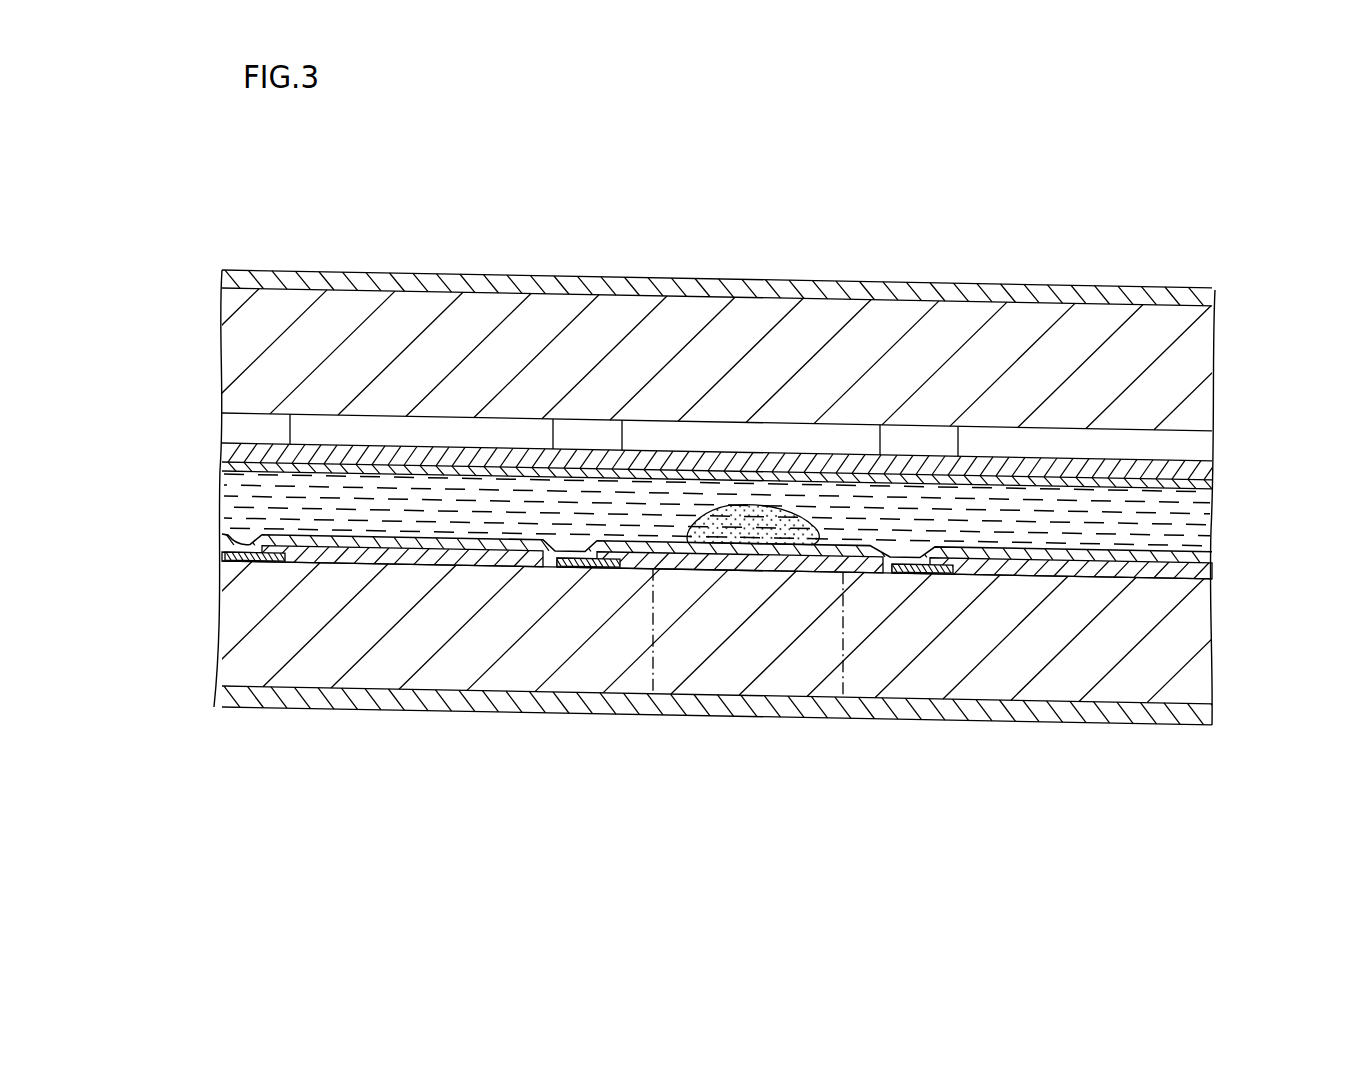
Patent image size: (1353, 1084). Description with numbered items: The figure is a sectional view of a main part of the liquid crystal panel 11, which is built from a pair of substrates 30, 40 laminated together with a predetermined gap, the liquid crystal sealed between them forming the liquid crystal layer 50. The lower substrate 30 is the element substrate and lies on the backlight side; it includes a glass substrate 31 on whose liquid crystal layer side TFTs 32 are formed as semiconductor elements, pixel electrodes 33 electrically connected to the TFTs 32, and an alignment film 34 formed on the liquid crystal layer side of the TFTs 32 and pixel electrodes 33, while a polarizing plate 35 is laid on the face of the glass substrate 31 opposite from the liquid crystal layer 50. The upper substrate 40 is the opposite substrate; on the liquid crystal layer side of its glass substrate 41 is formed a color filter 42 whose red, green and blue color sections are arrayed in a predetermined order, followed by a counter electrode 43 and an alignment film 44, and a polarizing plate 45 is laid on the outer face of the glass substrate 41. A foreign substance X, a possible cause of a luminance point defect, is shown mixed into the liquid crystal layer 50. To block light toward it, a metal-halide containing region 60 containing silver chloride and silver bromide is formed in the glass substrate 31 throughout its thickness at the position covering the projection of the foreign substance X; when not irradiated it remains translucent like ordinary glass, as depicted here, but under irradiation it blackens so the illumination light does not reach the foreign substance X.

The liquid crystal panel 11 is at (1134, 266).
The substrate 30 is at (1300, 578).
The glass substrate 31 is at (1190, 682).
The TFTs 32 is at (945, 578).
The pixel electrodes 33 is at (1128, 567).
The alignment film 34 is at (1188, 559).
The polarizing plate 35 is at (1185, 715).
The substrate 40 is at (1303, 492).
The glass substrate 41 is at (1193, 378).
The color filter 42 is at (1198, 444).
The counter electrode 43 is at (1198, 469).
The alignment film 44 is at (1198, 487).
The polarizing plate 45 is at (1187, 300).
The liquid crystal layer 50 is at (1180, 522).
The metal-halide containing region 60 is at (800, 674).
The foreign substance X is at (712, 548).